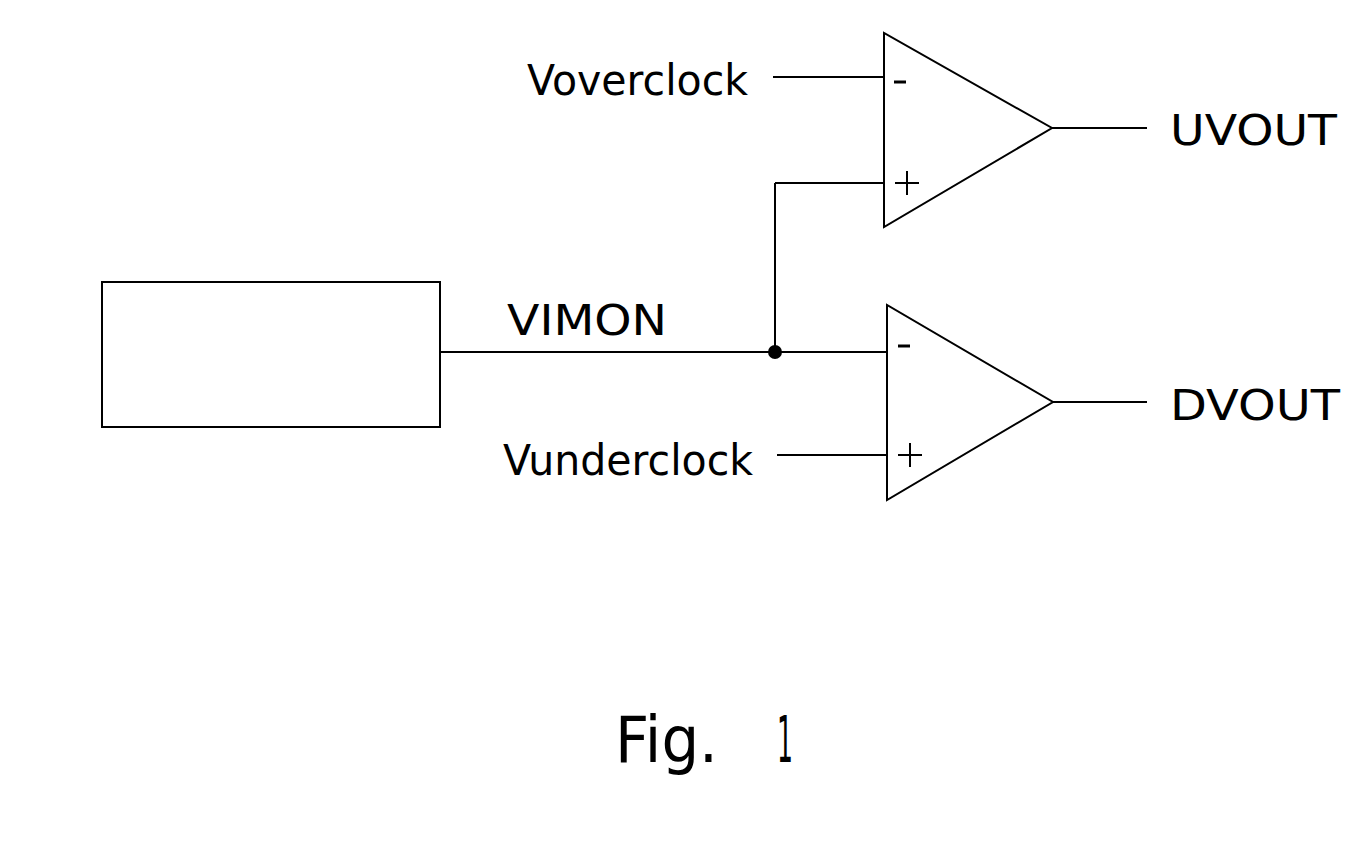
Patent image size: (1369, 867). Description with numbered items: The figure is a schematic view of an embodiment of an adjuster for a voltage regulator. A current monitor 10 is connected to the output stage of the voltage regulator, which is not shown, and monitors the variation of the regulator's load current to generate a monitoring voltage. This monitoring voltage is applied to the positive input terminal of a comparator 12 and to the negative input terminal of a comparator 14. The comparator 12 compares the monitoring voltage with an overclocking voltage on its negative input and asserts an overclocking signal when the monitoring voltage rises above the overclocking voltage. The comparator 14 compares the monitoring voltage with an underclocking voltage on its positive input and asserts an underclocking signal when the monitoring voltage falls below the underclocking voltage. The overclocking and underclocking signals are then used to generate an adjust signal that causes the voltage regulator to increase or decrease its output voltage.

The current monitor 10 is at (270, 282).
The comparator 12 is at (970, 178).
The comparator 14 is at (972, 450).